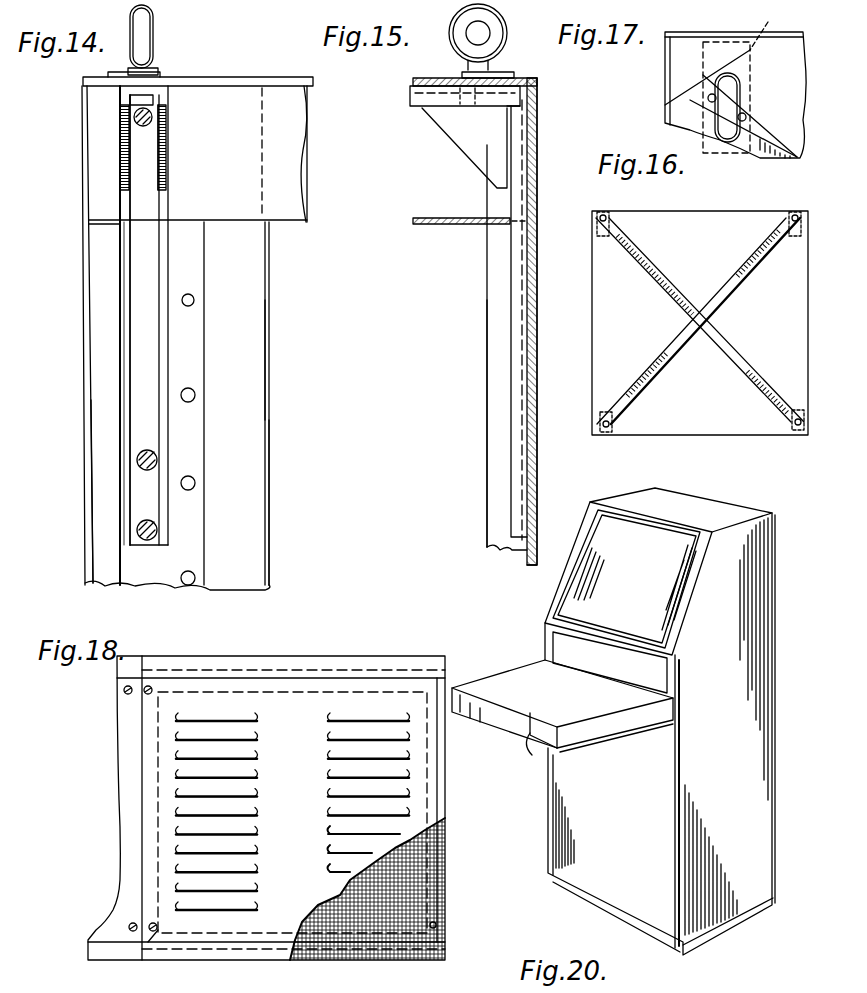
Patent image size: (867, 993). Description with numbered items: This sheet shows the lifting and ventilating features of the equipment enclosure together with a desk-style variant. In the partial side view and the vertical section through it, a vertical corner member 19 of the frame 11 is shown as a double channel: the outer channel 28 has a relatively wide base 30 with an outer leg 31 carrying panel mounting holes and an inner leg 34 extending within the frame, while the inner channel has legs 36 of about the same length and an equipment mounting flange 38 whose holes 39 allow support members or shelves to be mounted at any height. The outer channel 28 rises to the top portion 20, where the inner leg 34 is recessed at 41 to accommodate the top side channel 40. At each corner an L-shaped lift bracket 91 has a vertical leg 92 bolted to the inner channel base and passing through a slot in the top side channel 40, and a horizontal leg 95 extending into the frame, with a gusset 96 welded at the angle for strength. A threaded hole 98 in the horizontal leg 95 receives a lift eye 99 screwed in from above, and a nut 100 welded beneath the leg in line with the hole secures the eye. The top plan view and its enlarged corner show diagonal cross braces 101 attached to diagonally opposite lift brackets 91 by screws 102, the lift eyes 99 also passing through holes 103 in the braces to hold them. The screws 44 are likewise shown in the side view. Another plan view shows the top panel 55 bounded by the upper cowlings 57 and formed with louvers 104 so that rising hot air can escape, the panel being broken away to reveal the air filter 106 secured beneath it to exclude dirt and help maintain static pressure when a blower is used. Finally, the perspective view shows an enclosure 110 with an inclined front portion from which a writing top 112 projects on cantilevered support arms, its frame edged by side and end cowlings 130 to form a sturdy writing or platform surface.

In FIG. 14, the frame 11 is at (309, 318).
In FIG. 15, the frame 11 is at (467, 274).
In FIG. 14, the vertical corner member 19 is at (282, 458).
In FIG. 15, the vertical corner member 19 is at (553, 408).
In FIG. 14, the top portion 20 is at (82, 172).
In FIG. 15, the top portion 20 is at (548, 144).
In FIG. 14, the outer channel 28 is at (272, 272).
In FIG. 14, the base of outer channel 30 is at (260, 292).
In FIG. 15, the base of outer channel 30 is at (540, 108).
In FIG. 14, the outer leg 31 is at (89, 398).
In FIG. 14, the inner leg 34 is at (273, 412).
In FIG. 14, the legs of inner channel 36 is at (118, 322).
In FIG. 15, the legs of inner channel 36 is at (497, 345).
In FIG. 14, the equipment mounting flange 38 is at (190, 284).
In FIG. 14, the holes 39 is at (195, 299).
In FIG. 14, the top side channel 40 is at (295, 172).
In FIG. 15, the top side channel 40 is at (447, 192).
In FIG. 14, the recess 41 is at (266, 222).
In FIG. 14, the screw 44 is at (156, 456).
In FIG. 18, the top panel 55 is at (340, 660).
In FIG. 18, the upper cowling 57 is at (262, 660).
In FIG. 14, the lift bracket 91 is at (170, 138).
In FIG. 15, the lift bracket 91 is at (444, 148).
In FIG. 17, the lift bracket 91 is at (716, 55).
In FIG. 16, the lift bracket 91 is at (607, 416).
In FIG. 14, the vertical leg 92 is at (150, 242).
In FIG. 15, the vertical leg 92 is at (516, 250).
In FIG. 14, the horizontal leg 95 is at (164, 100).
In FIG. 15, the horizontal leg 95 is at (418, 100).
In FIG. 14, the gusset 96 is at (165, 166).
In FIG. 15, the gusset 96 is at (478, 146).
In FIG. 15, the threaded hole 98 is at (498, 75).
In FIG. 14, the lift eye 99 is at (153, 24).
In FIG. 15, the lift eye 99 is at (500, 34).
In FIG. 17, the lift eye 99 is at (745, 82).
In FIG. 14, the nut 100 is at (130, 100).
In FIG. 14, the diagonal cross brace 101 is at (244, 78).
In FIG. 15, the diagonal cross brace 101 is at (420, 74).
In FIG. 17, the diagonal cross brace 101 is at (778, 142).
In FIG. 16, the diagonal cross brace 101 is at (670, 286).
In FIG. 14, the screw 102 is at (110, 74).
In FIG. 17, the screw 102 is at (690, 100).
In FIG. 17, the hole 103 is at (740, 102).
In FIG. 16, the hole 103 is at (608, 218).
In FIG. 18, the louver 104 is at (254, 738).
In FIG. 15, the air filter 106 is at (488, 106).
In FIG. 18, the air filter 106 is at (412, 888).
In FIG. 20, the enclosure 110 is at (535, 633).
In FIG. 20, the writing top 112 is at (570, 708).
In FIG. 20, the side and end cowling 130 is at (590, 738).